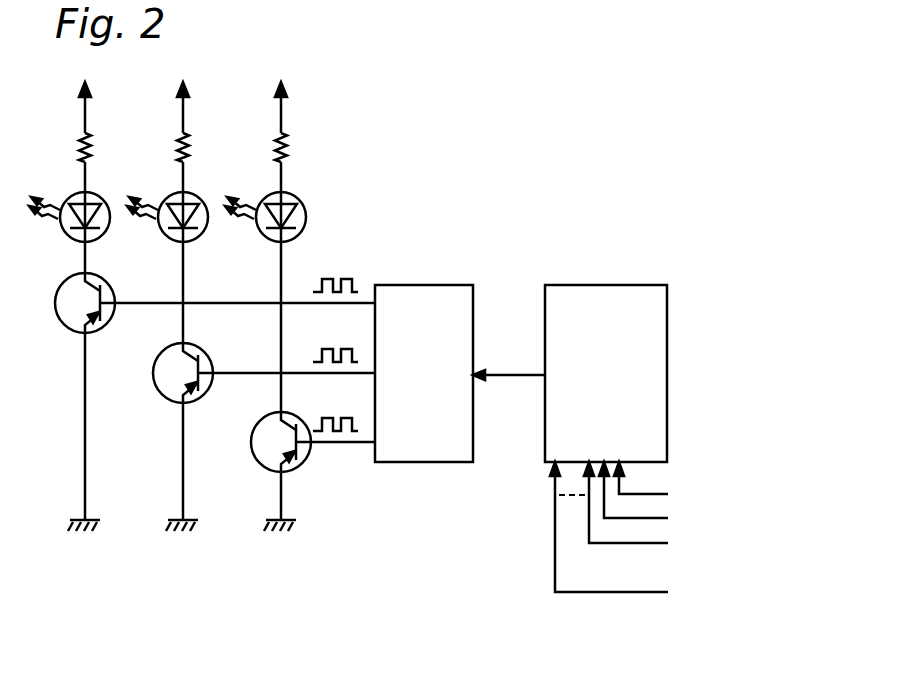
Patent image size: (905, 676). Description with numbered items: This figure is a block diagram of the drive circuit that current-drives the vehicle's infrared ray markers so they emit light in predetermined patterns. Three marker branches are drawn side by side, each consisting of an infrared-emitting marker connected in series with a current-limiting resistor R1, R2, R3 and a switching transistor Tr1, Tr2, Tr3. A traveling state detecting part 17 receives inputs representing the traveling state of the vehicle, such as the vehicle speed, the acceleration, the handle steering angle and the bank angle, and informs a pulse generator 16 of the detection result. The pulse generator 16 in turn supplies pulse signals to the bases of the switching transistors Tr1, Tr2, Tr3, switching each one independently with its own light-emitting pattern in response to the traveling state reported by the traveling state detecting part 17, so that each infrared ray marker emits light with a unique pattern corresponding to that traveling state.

The current-limiting resistor R1 is at (105, 122).
The current-limiting resistor R2 is at (203, 122).
The current-limiting resistor R3 is at (301, 122).
The switching transistor Tr1 is at (104, 195).
The switching transistor Tr2 is at (202, 195).
The switching transistor Tr3 is at (300, 195).
The pulse generator 16 is at (435, 285).
The traveling state detecting part 17 is at (609, 285).